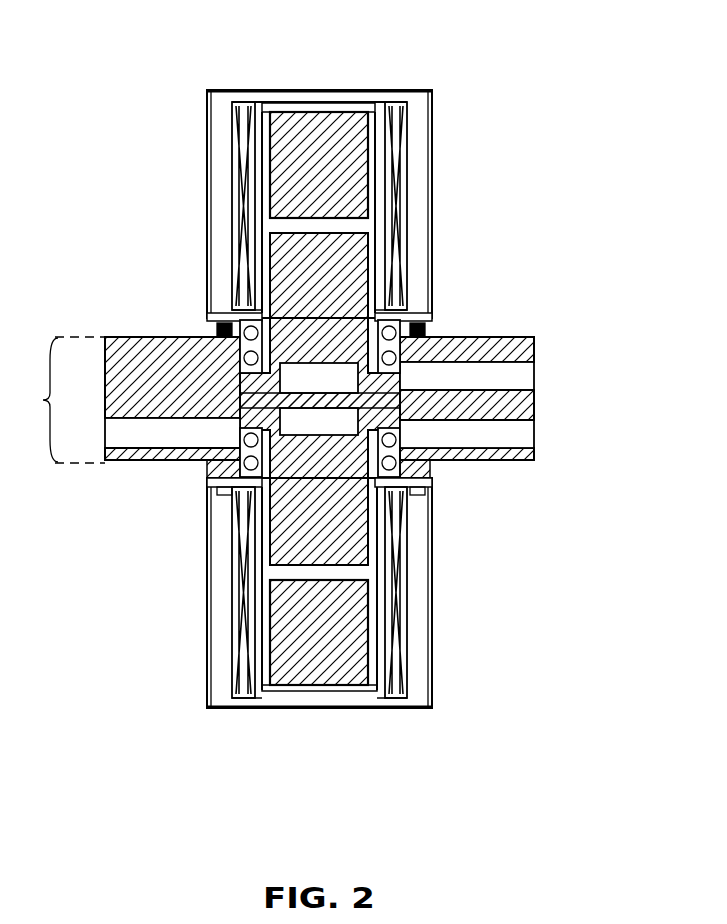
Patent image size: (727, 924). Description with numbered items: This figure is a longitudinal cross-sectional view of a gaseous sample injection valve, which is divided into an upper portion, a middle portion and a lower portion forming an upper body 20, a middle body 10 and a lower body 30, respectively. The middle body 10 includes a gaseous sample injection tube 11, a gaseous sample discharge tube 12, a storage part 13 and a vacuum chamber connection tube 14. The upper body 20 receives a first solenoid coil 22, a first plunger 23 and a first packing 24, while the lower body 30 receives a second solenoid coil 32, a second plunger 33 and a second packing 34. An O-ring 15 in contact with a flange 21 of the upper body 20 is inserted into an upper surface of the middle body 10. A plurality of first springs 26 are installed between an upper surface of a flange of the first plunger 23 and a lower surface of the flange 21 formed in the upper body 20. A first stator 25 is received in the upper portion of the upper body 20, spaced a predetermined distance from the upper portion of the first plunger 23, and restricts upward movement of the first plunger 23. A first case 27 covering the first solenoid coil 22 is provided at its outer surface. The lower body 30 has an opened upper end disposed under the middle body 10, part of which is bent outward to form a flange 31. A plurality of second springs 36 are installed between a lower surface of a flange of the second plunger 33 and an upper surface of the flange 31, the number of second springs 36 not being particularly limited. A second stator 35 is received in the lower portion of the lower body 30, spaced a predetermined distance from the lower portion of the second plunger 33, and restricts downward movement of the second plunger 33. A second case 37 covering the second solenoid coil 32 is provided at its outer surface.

The middle body 10 is at (65, 400).
The gaseous sample injection tube 11 is at (130, 432).
The gaseous sample discharge tube 12 is at (497, 428).
The storage part 13 is at (405, 433).
The vacuum chamber connection tube 14 is at (495, 373).
The O-ring 15 is at (208, 337).
The upper body 20 is at (432, 112).
The flange 21 is at (220, 326).
The first solenoid coil 22 is at (245, 203).
The first plunger 23 is at (372, 287).
The first packing 24 is at (430, 340).
The first stator 25 is at (350, 178).
The first spring 26 is at (242, 328).
The first case 27 is at (421, 92).
The lower body 30 is at (385, 652).
The flange 31 is at (237, 488).
The second solenoid coil 32 is at (243, 592).
The second plunger 33 is at (270, 552).
The second packing 34 is at (222, 466).
The second stator 35 is at (333, 690).
The second spring 36 is at (228, 487).
The second case 37 is at (432, 698).